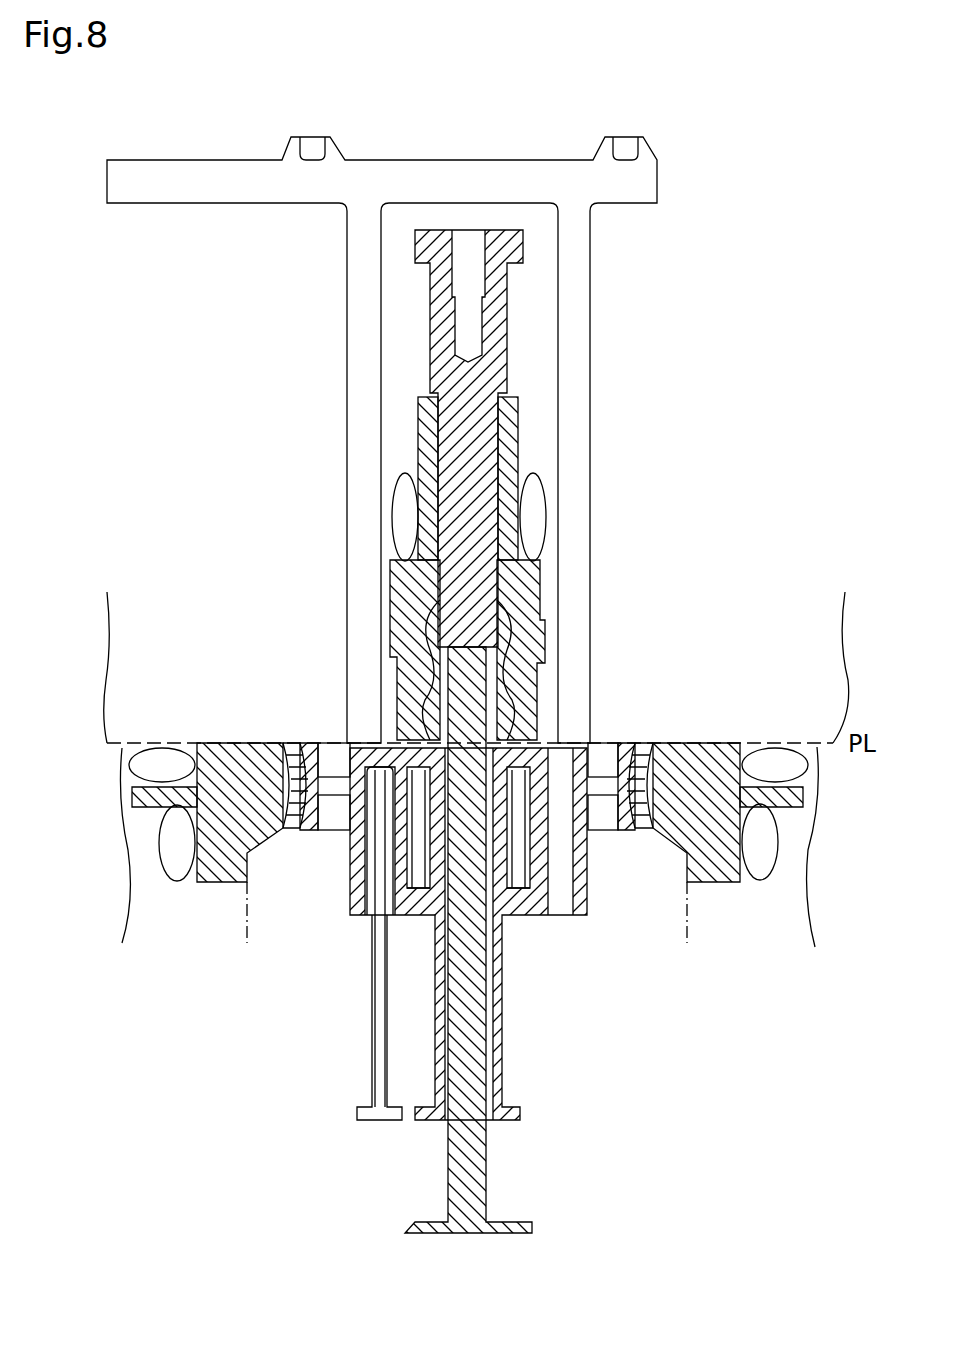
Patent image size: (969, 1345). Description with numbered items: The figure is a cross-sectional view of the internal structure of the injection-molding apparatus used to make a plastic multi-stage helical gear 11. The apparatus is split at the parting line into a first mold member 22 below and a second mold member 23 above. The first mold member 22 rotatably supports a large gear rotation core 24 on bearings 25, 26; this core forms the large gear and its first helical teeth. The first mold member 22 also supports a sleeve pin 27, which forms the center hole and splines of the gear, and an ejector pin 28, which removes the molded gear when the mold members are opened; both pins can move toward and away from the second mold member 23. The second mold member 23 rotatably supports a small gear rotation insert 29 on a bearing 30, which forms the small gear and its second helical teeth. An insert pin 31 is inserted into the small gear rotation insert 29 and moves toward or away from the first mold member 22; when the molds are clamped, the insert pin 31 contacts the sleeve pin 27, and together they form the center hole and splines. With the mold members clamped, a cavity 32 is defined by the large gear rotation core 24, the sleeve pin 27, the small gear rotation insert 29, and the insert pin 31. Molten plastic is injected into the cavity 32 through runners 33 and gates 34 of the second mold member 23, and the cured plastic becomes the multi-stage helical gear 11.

The multi-stage helical gear 11 is at (303, 731).
The first mold member 22 is at (812, 903).
The second mold member 23 is at (823, 612).
The large gear rotation core 24 is at (712, 884).
The bearing 25 is at (770, 752).
The bearing 26 is at (758, 870).
The sleeve pin 27 is at (490, 998).
The ejector pin 28 is at (372, 1007).
The small gear rotation insert 29 is at (390, 596).
The bearing 30 is at (531, 474).
The insert pin 31 is at (508, 358).
The cavity 32 is at (645, 745).
The runners 33 is at (467, 160).
The gates 34 is at (342, 743).